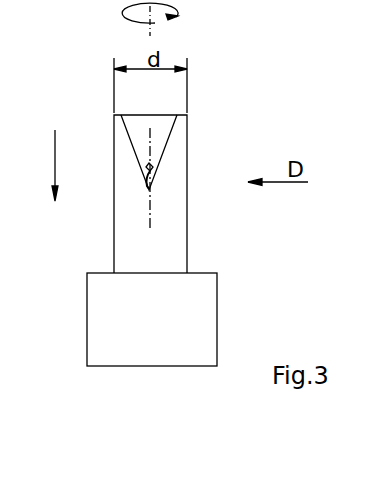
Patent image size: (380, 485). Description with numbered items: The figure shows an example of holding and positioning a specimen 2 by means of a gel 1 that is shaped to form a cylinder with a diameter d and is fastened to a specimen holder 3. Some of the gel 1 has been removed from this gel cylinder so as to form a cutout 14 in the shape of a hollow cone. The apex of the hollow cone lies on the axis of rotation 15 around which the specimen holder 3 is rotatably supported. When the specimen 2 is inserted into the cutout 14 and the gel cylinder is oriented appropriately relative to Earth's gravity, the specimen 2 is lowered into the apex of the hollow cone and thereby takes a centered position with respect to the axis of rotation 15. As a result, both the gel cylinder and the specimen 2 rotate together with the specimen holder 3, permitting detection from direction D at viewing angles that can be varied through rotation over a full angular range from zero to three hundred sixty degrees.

The gel 1 is at (120, 235).
The specimen 2 is at (142, 172).
The specimen holder 3 is at (210, 308).
The cutout 14 is at (170, 135).
The axis of rotation 15 is at (150, 33).